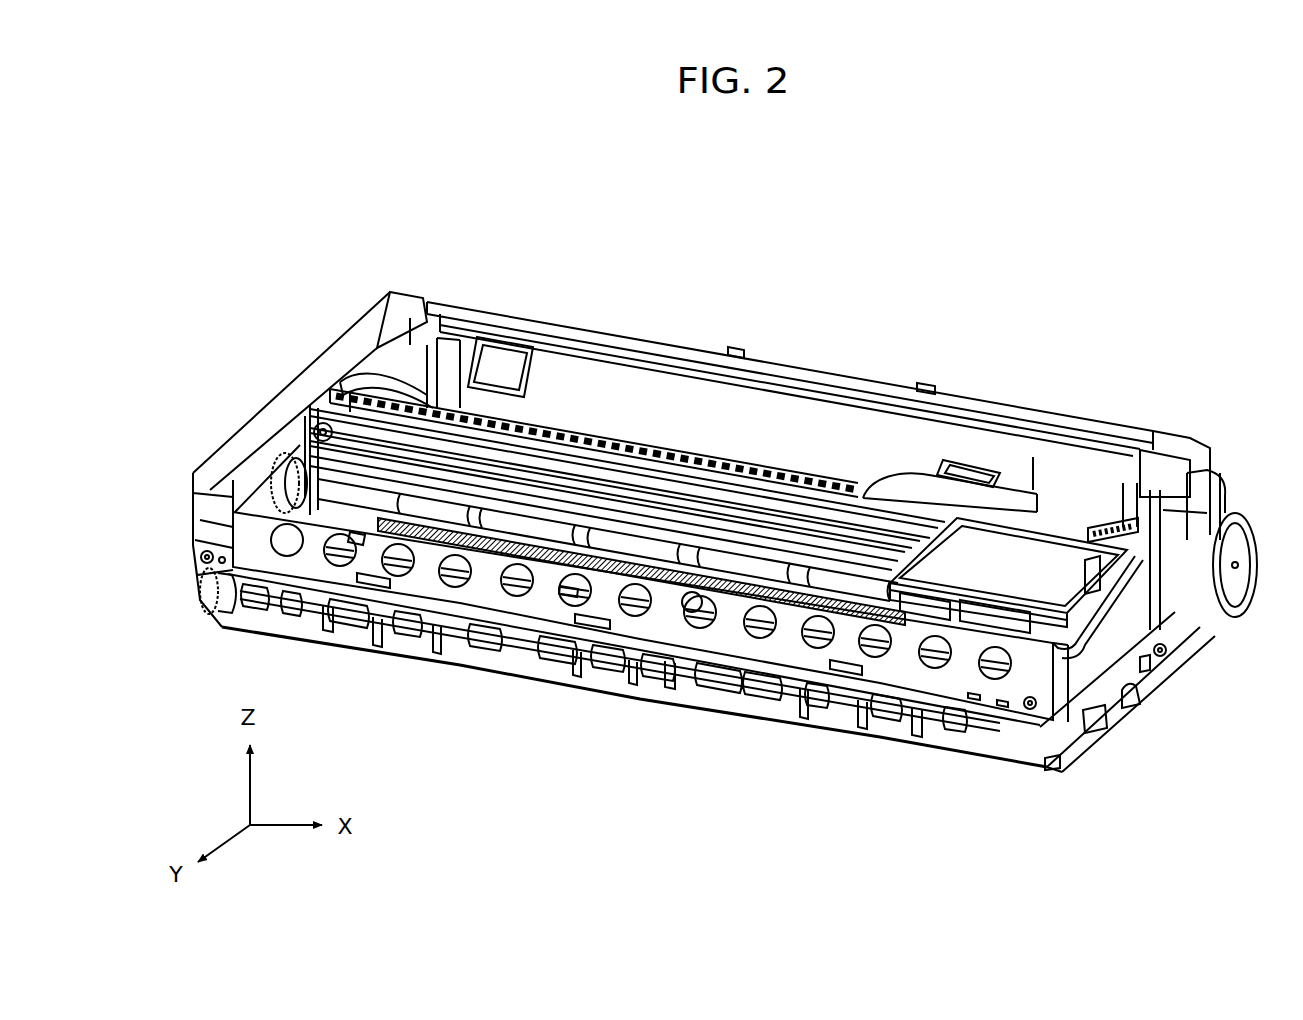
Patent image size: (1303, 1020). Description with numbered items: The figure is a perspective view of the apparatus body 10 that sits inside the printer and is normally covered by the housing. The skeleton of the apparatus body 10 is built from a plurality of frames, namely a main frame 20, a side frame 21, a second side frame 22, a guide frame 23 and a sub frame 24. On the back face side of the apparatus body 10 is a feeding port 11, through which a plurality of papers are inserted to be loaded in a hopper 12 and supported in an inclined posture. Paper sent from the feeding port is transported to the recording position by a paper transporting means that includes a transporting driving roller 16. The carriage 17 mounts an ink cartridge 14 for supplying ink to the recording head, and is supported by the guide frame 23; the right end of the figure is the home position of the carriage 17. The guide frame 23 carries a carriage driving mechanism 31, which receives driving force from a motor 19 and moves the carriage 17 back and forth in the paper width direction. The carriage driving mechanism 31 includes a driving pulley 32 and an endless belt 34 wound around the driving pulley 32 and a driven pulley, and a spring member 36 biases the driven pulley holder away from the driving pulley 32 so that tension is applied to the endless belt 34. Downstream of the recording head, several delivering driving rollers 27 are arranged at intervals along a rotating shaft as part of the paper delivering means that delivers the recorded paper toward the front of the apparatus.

The apparatus body 10 is at (749, 246).
The feeding port 11 is at (868, 438).
The hopper 12 is at (700, 390).
The ink cartridge 14 is at (1023, 560).
The transporting driving roller 16 is at (573, 533).
The carriage 17 is at (1009, 566).
The motor 19 is at (372, 363).
The main frame 20 is at (905, 493).
The side frame 21 is at (1190, 610).
The side frame 22 is at (263, 460).
The guide frame 23 is at (532, 445).
The sub frame 24 is at (490, 592).
The delivering driving roller 27 is at (447, 643).
The carriage driving mechanism 31 is at (667, 486).
The driving pulley 32 is at (303, 443).
The endless belt 34 is at (340, 378).
The spring member 36 is at (1127, 530).